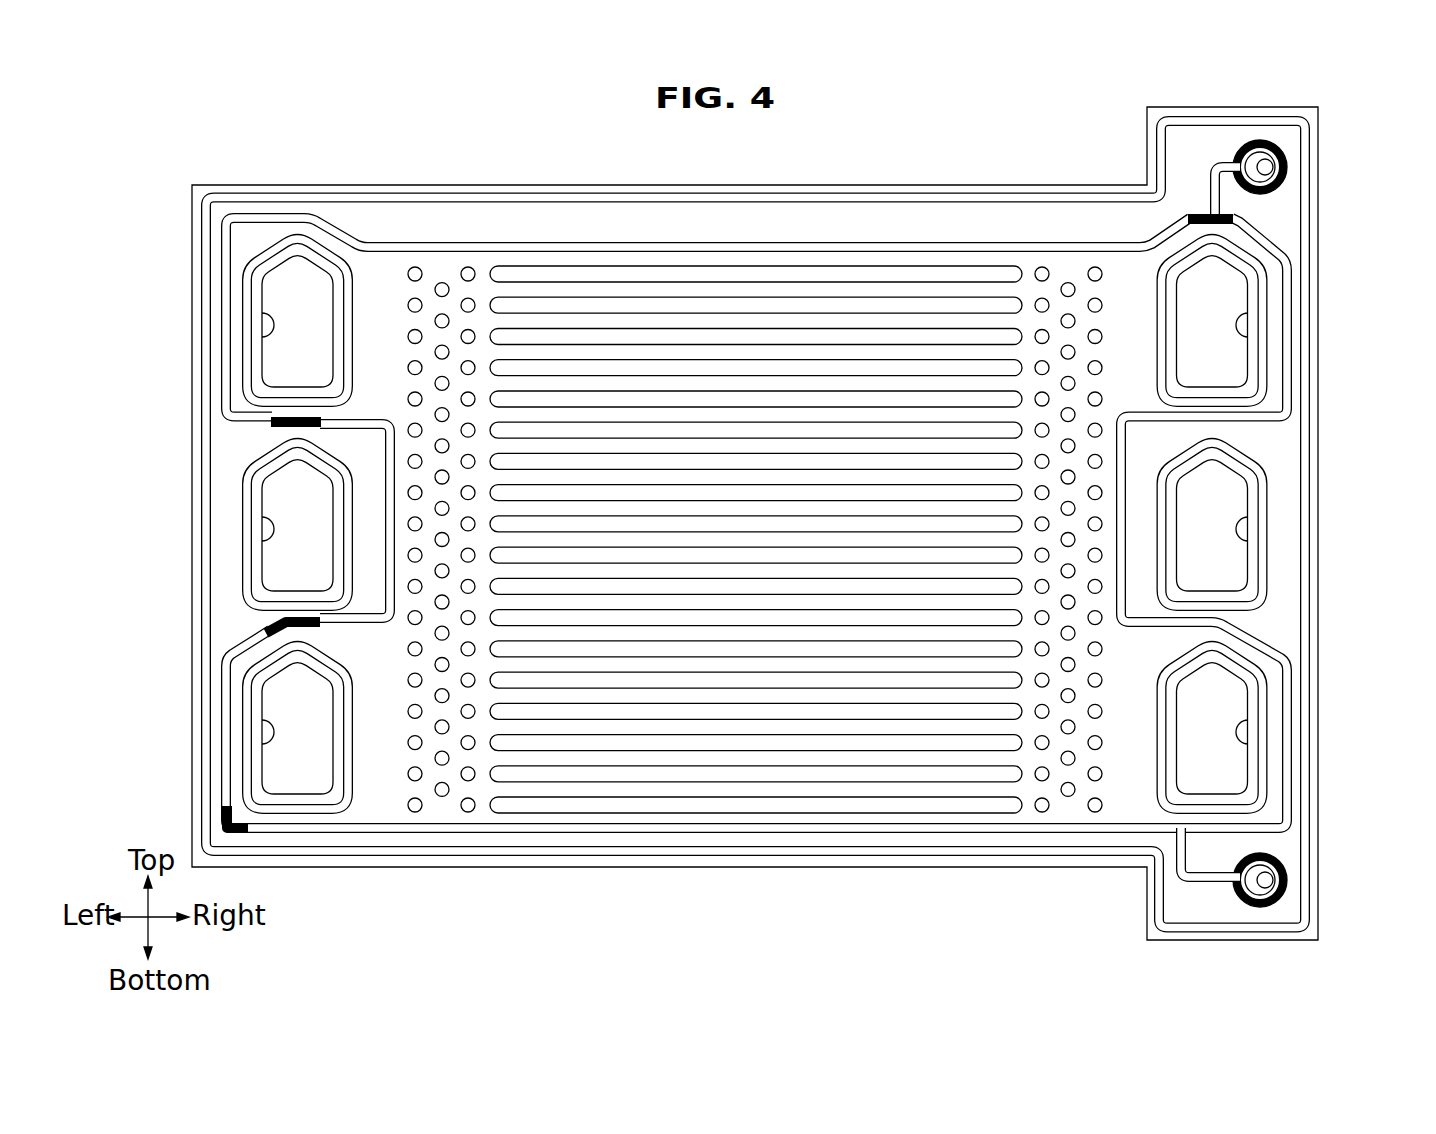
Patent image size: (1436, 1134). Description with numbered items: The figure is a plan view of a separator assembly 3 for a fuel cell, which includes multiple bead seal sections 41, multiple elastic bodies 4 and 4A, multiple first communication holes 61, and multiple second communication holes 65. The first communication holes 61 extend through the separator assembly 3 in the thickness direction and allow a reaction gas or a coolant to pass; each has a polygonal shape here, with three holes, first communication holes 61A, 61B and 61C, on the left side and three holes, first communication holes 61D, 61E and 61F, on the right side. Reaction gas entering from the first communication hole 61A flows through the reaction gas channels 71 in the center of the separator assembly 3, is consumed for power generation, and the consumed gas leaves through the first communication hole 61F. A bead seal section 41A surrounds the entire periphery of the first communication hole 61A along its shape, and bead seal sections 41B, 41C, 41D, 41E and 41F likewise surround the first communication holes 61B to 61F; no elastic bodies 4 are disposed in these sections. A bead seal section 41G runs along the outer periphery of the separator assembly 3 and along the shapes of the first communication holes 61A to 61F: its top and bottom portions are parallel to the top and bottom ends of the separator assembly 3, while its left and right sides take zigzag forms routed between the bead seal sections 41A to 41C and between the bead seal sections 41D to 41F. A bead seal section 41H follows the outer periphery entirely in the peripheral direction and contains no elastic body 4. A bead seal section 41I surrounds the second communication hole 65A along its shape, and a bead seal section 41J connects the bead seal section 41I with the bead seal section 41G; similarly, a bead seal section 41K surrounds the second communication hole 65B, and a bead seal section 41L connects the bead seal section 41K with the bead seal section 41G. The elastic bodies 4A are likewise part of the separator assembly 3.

The separator assembly 3 is at (786, 139).
The elastic body 4 is at (280, 428).
The elastic body 4A is at (1285, 143).
The bead seal section 41 is at (745, 183).
The bead seal section 41A is at (243, 283).
The bead seal section 41B is at (243, 487).
The bead seal section 41C is at (243, 690).
The bead seal section 41D is at (1265, 283).
The bead seal section 41E is at (1265, 488).
The bead seal section 41F is at (1265, 690).
The bead seal section 41G is at (626, 248).
The bead seal section 41H is at (881, 198).
The bead seal section 41I is at (1233, 157).
The bead seal section 41J is at (1210, 195).
The bead seal section 41K is at (1233, 893).
The bead seal section 41L is at (1178, 868).
The first communication hole 61 is at (202, 321).
The first communication hole 61A is at (268, 335).
The first communication hole 61B is at (268, 540).
The first communication hole 61C is at (268, 745).
The first communication hole 61D is at (1250, 338).
The first communication hole 61E is at (1248, 542).
The first communication hole 61F is at (1248, 745).
The second communication hole 65 is at (1336, 167).
The second communication hole 65A is at (1270, 173).
The second communication hole 65B is at (1270, 883).
The reaction gas channel 71 is at (560, 306).